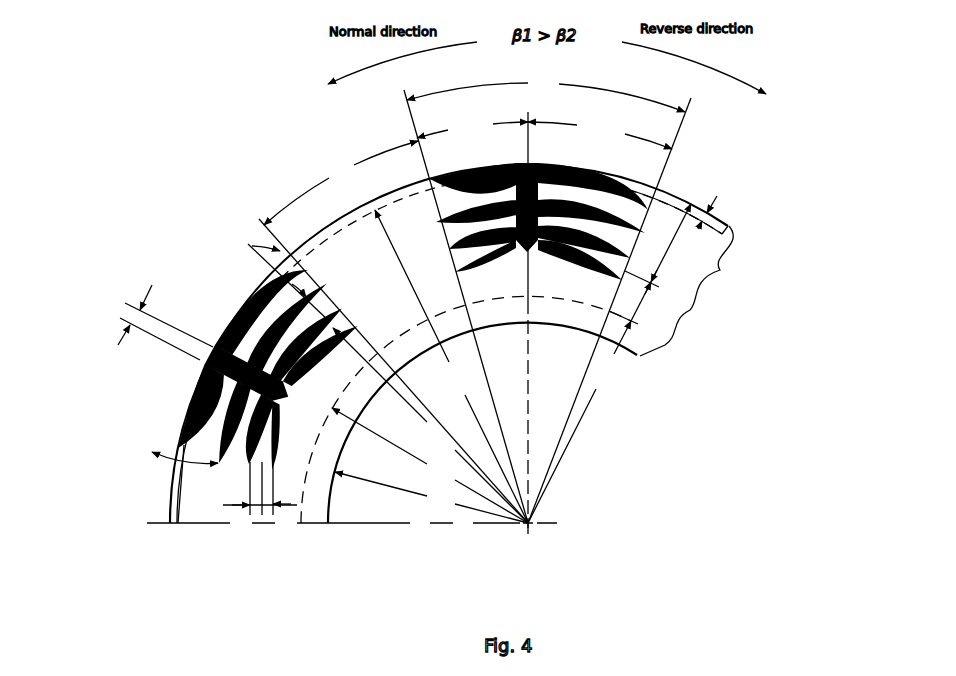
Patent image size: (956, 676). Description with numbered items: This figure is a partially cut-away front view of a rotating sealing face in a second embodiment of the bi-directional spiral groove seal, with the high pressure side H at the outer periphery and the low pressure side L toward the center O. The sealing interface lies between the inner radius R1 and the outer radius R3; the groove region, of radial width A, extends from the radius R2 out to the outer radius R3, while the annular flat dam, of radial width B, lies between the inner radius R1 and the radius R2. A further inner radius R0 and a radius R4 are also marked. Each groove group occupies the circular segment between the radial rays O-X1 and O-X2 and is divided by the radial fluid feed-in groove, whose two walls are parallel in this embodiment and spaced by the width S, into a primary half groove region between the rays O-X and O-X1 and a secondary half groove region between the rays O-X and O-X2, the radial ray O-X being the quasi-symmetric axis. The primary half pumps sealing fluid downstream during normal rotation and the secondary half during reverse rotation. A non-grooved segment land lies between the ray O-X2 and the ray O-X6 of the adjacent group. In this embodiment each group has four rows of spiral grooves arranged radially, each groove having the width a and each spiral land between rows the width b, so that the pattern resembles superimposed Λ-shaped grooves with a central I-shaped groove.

The quasi-symmetric axis radial ray X is at (526, 316).
The right boundary radial ray X1 is at (618, 299).
The left boundary radial ray X2 is at (460, 297).
The segment land boundary radial ray X6 is at (391, 355).
The inner circle radius R0 is at (482, 423).
The inner radius R1 is at (466, 409).
The dam-groove boundary radius R2 is at (430, 425).
The outer radius R3 is at (474, 349).
The dimension radius R4 is at (579, 422).
The radial width of groove region A is at (667, 243).
The radial width of annular flat dam B is at (634, 297).
The high pressure side H is at (707, 203).
The low pressure side L is at (553, 350).
The width of radial fluid feed-in groove S is at (160, 322).
The center of sealing face O is at (535, 537).
The width of spiral groove a is at (260, 488).
The width of spiral land b is at (277, 488).